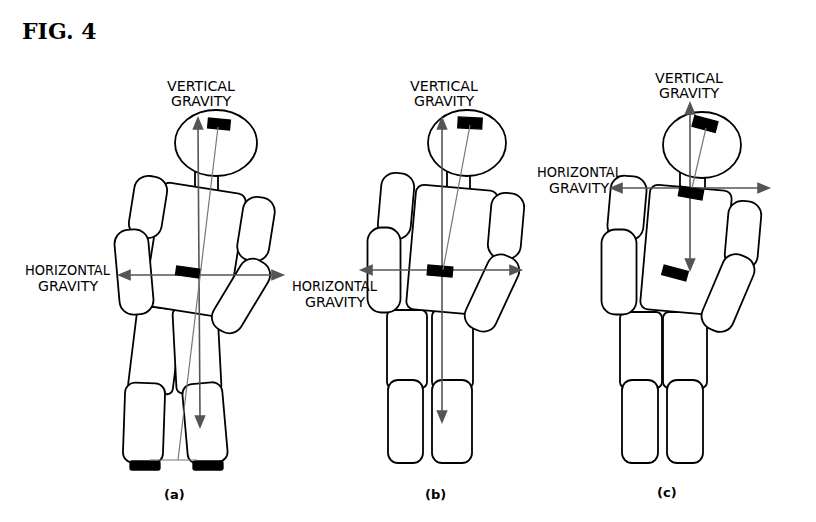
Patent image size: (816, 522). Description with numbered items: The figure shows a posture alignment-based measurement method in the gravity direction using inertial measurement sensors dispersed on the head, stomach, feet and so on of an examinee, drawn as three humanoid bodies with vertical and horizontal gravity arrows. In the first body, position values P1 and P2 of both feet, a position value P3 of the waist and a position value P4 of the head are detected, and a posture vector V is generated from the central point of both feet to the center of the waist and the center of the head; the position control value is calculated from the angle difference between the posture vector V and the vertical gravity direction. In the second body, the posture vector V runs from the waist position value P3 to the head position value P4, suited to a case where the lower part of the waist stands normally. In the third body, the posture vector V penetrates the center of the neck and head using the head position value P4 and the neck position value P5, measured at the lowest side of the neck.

The position value of one foot P1 is at (131, 462).
The position value of the other foot P2 is at (223, 462).
The position value of waist P3 is at (426, 267).
The position value of head P4 is at (477, 119).
The position value of neck P5 is at (682, 200).
The posture vector V is at (433, 292).